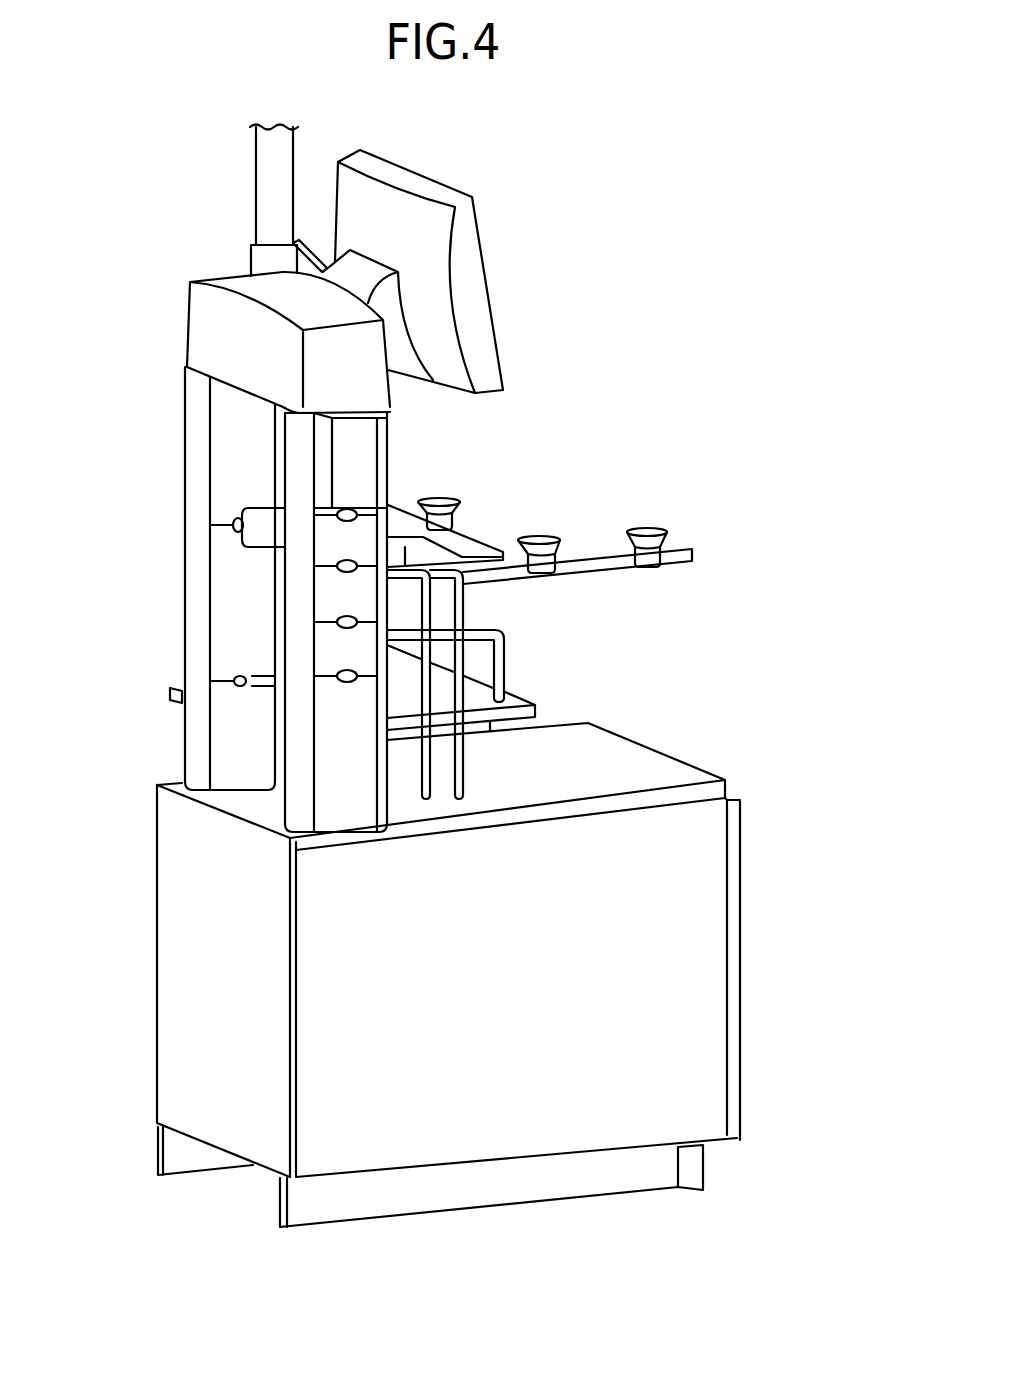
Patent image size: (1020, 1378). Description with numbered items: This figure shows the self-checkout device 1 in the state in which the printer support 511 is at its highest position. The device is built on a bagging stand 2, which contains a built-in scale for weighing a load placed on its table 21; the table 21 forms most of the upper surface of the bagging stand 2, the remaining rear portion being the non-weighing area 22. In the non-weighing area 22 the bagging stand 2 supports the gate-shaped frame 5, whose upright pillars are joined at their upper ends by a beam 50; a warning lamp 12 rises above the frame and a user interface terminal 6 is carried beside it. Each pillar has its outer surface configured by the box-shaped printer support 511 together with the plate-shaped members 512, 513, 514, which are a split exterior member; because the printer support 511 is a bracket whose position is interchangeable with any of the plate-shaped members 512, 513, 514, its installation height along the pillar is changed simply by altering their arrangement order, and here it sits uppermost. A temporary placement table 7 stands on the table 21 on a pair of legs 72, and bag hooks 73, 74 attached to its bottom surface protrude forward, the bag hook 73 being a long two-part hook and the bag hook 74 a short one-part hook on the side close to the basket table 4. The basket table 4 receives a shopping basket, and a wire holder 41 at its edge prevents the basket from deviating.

The self-checkout device 1 is at (569, 171).
The bagging stand 2 is at (741, 958).
The table 21 is at (660, 767).
The non-weighing area 22 is at (254, 814).
The warning lamp 12 is at (262, 192).
The user interface (UI) terminal 6 is at (490, 289).
The gate-shaped frame 5 is at (157, 352).
The beam 50 is at (205, 318).
The printer support 511 is at (357, 468).
The plate-shaped member 512 is at (338, 638).
The plate-shaped member 513 is at (340, 712).
The plate-shaped member 514 is at (228, 548).
The temporary placement table 7 is at (460, 540).
The bag hook 74 is at (457, 495).
The bag hook 73 is at (692, 552).
The legs 72 is at (427, 772).
The wire holder 41 is at (507, 660).
The basket table 4 is at (523, 692).